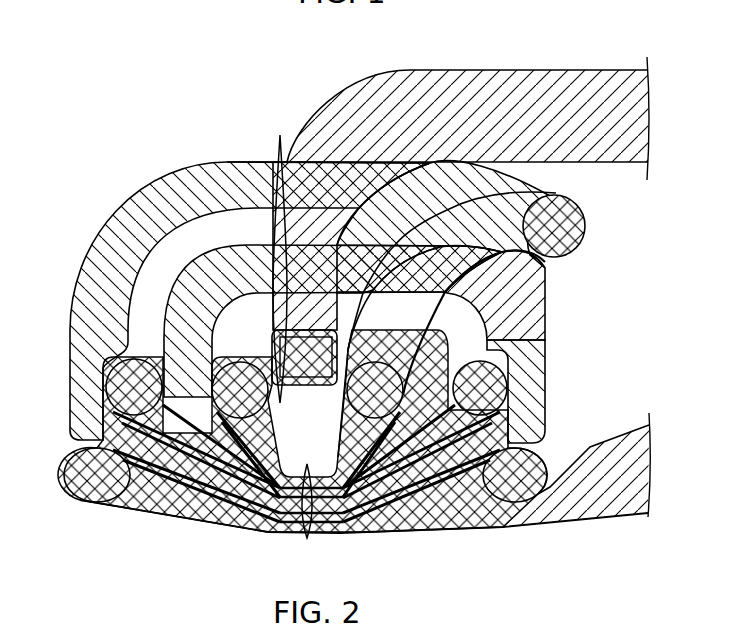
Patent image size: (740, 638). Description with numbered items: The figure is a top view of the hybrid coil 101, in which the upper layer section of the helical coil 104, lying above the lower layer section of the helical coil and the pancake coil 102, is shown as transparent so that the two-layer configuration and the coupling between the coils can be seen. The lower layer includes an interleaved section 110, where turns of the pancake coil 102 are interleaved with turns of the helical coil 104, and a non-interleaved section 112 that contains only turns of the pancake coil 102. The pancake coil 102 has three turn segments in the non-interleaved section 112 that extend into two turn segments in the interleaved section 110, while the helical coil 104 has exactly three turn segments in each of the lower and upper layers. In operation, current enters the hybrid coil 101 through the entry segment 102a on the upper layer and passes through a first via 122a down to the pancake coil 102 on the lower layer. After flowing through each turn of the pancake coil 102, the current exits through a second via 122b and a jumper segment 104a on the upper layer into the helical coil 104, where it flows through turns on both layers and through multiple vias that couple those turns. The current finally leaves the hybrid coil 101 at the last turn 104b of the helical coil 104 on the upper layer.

The hybrid coil 101 is at (580, 50).
The pancake coil 102 is at (215, 162).
The entry segment 102a is at (478, 70).
The helical coil 104 is at (169, 511).
The jumper segment 104a is at (539, 257).
The last turn 104b is at (589, 517).
The interleaved section 110 is at (307, 540).
The non-interleaved section 112 is at (281, 135).
The first via 122a is at (305, 385).
The second via 122b is at (585, 226).